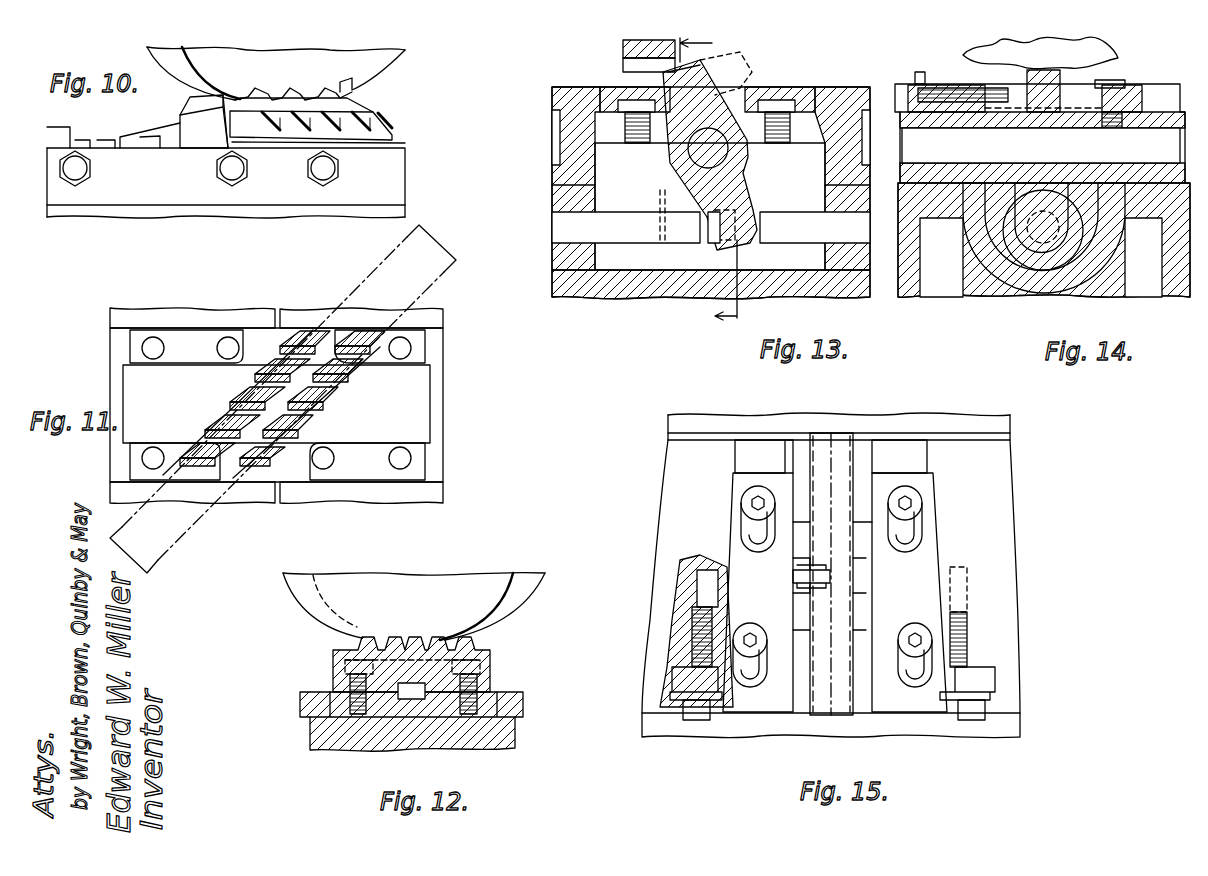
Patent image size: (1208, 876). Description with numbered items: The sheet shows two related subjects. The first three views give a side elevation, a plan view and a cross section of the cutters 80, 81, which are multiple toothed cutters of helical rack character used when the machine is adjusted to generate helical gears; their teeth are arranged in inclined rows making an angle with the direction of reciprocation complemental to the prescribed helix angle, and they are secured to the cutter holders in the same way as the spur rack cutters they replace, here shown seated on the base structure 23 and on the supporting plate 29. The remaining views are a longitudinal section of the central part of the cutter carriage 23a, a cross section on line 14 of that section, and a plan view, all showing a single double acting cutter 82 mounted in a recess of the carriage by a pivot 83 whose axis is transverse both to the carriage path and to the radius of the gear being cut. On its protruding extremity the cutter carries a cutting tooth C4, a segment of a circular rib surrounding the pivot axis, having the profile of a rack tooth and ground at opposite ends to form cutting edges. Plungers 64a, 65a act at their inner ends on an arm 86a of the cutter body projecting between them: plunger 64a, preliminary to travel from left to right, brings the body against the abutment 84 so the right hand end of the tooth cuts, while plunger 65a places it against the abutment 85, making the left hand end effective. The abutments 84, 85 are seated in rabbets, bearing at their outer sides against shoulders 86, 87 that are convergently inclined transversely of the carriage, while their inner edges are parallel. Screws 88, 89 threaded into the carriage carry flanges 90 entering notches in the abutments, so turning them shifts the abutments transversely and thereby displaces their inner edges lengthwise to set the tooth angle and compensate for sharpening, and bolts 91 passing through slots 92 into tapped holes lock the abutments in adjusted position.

In FIG. 10, the cutter 80 is at (200, 140).
In FIG. 11, the cutter 80 is at (258, 340).
In FIG. 12, the cutter 80 is at (490, 662).
In FIG. 10, the cutter 81 is at (298, 128).
In FIG. 11, the cutter 81 is at (297, 455).
In FIG. 10, the base frame 23 is at (395, 152).
In FIG. 12, the base plate 29 is at (494, 728).
In FIG. 13, the section line 14— 14 is at (686, 190).
In FIG. 13, the cutting tooth C4 is at (700, 72).
In FIG. 14, the cutting tooth C4 is at (1042, 71).
In FIG. 15, the cutting tooth C4 is at (793, 580).
In FIG. 13, the cutter carriage 23a is at (860, 82).
In FIG. 14, the cutter carriage 23a is at (1037, 173).
In FIG. 13, the plunger 64a is at (567, 223).
In FIG. 14, the plunger 64a is at (1032, 240).
In FIG. 13, the plunger 65a is at (786, 228).
In FIG. 13, the double acting cutter 82 is at (688, 155).
In FIG. 14, the double acting cutter 82 is at (1067, 118).
In FIG. 13, the pivot 83 is at (698, 160).
In FIG. 14, the pivot 83 is at (1145, 137).
In FIG. 13, the abutment 84 is at (628, 141).
In FIG. 14, the abutment 84 is at (1018, 102).
In FIG. 15, the abutment 84 is at (735, 553).
In FIG. 13, the abutment 85 is at (777, 88).
In FIG. 15, the abutment 85 is at (920, 570).
In FIG. 13, the shoulder 86 is at (572, 100).
In FIG. 15, the shoulder 86 is at (733, 490).
In FIG. 13, the arm 86a is at (743, 212).
In FIG. 13, the shoulder 87 is at (826, 87).
In FIG. 15, the shoulder 87 is at (935, 488).
In FIG. 15, the screw 88 is at (690, 718).
In FIG. 15, the screw 89 is at (972, 718).
In FIG. 15, the flange 90 is at (672, 695).
In FIG. 15, the bolt 91 is at (760, 492).
In FIG. 15, the slot 92 is at (915, 630).